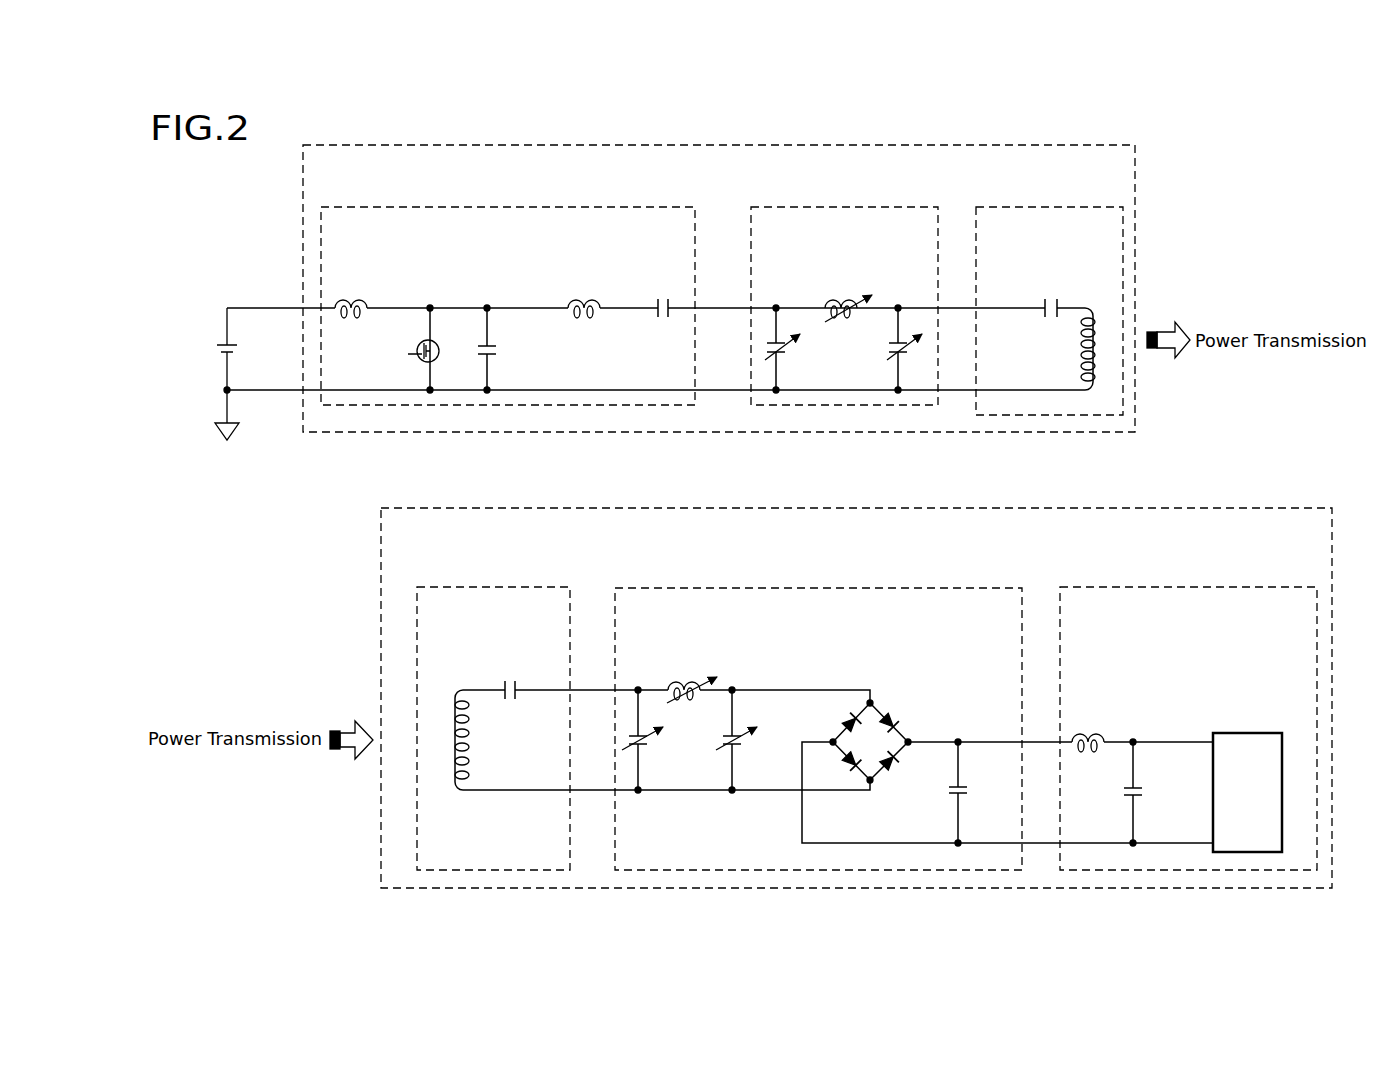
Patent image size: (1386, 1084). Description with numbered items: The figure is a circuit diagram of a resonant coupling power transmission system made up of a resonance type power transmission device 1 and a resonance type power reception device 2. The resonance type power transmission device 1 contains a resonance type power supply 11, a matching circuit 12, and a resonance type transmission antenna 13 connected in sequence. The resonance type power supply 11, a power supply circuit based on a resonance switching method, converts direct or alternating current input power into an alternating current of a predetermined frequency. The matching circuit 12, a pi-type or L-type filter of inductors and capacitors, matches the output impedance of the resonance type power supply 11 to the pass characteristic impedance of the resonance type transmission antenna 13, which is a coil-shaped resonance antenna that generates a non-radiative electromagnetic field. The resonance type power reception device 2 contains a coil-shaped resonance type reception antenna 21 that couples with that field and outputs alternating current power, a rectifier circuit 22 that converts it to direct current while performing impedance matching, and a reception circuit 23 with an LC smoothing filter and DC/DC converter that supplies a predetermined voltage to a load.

The resonance type power transmission device 1 is at (345, 146).
The resonance type power supply 11 is at (520, 208).
The matching circuit 12 is at (783, 208).
The resonance type transmission antenna 13 is at (1040, 208).
The resonance type power reception device 2 is at (422, 509).
The resonance type reception antenna 21 is at (478, 588).
The rectifier circuit 22 is at (637, 588).
The reception circuit 23 is at (1083, 588).